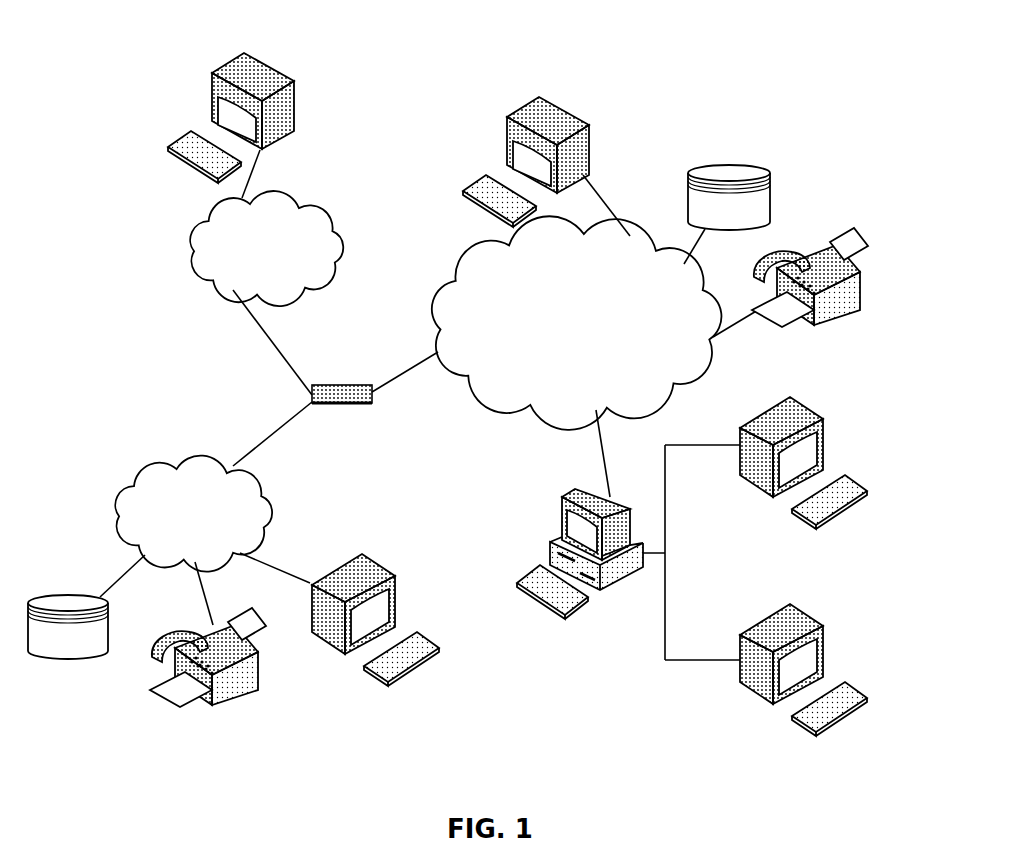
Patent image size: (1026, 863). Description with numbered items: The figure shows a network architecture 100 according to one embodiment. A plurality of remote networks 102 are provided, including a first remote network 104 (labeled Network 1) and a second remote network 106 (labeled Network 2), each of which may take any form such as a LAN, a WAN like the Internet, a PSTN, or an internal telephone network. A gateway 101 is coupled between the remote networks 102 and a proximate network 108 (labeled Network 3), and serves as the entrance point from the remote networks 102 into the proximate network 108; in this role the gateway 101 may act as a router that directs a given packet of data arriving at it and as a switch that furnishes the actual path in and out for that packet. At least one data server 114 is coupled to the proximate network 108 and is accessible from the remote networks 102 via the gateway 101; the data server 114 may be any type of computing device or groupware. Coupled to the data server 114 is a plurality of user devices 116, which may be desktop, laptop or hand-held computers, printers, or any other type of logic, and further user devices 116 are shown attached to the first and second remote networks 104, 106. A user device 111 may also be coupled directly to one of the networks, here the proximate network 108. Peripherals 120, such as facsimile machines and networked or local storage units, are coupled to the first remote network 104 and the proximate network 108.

The network architecture 100 is at (140, 36).
The gateway 101 is at (327, 385).
The remote networks 102 is at (168, 312).
The first remote network 104 is at (118, 490).
The second remote network 106 is at (338, 222).
The proximate network 108 is at (687, 388).
The user device 111 is at (590, 124).
The data server 114 is at (562, 508).
The user devices 116 is at (296, 88).
The peripheral 120 is at (771, 173).